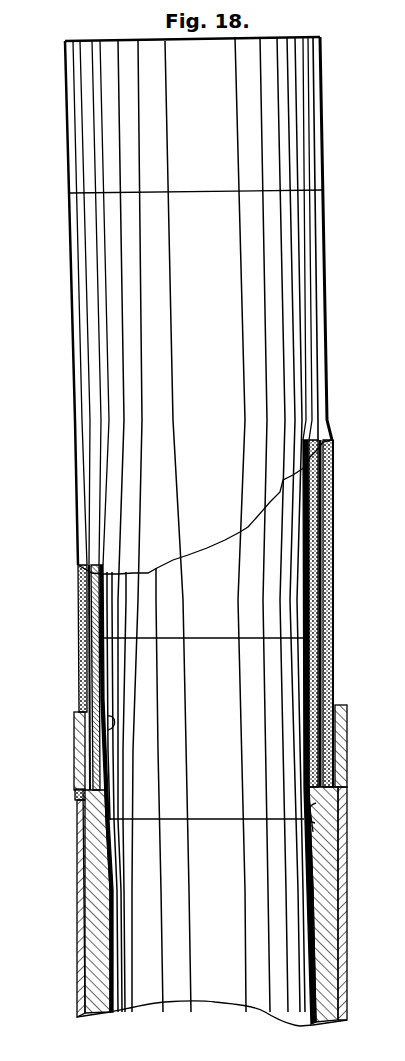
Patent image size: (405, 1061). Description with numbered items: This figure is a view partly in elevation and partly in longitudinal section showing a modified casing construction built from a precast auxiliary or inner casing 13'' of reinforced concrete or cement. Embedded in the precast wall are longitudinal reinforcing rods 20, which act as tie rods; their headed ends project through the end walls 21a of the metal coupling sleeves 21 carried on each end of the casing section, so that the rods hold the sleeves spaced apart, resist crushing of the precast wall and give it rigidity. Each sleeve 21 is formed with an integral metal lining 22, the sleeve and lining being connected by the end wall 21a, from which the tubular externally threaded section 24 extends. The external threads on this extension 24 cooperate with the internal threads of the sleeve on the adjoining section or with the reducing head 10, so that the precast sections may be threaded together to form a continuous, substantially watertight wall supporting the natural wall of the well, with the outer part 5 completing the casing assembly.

The longitudinal reinforcing rods 20 is at (110, 215).
The precast auxiliary or inner casing 13'' is at (240, 531).
The integral metal linings 22 is at (82, 692).
The metal coupling sleeves 21 is at (88, 736).
The end walls 21a is at (76, 790).
The tubular externally threaded section 24 is at (327, 833).
The reducing head 10 is at (333, 897).
The outer casing 5 is at (350, 948).